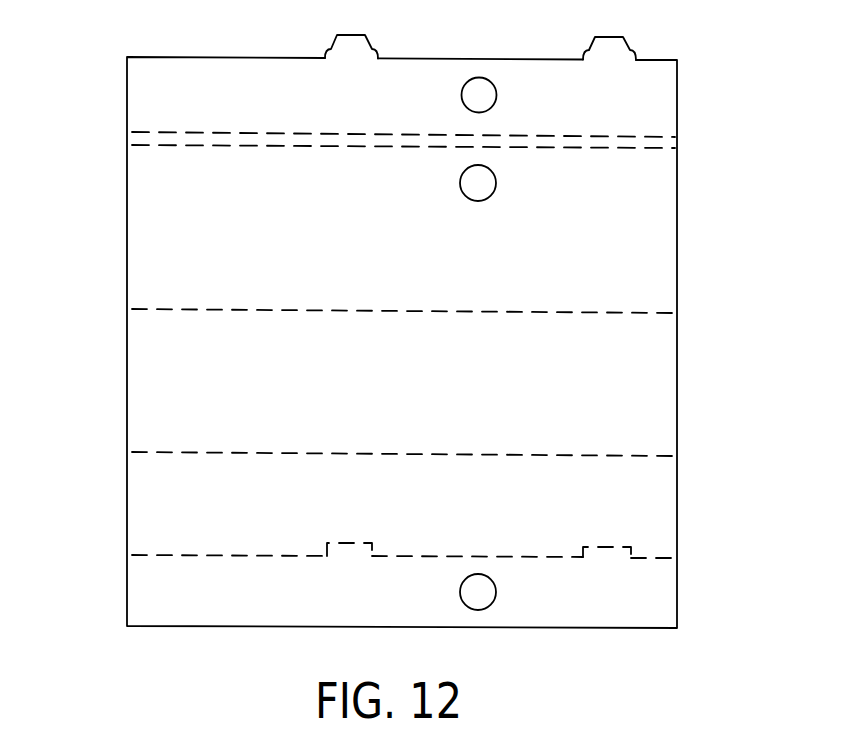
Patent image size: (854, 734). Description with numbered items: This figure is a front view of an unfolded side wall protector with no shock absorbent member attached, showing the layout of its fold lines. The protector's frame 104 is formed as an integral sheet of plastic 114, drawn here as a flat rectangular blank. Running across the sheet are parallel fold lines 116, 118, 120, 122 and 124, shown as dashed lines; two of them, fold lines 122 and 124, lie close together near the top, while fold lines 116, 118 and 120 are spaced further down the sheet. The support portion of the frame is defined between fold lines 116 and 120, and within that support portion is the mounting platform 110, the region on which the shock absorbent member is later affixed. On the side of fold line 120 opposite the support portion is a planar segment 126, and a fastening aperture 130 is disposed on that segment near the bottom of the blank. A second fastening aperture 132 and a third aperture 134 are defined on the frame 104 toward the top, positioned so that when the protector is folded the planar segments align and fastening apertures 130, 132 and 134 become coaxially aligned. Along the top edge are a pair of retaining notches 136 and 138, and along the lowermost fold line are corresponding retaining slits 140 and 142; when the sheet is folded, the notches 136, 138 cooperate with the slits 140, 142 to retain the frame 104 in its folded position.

The frame 104 is at (128, 250).
The mounting platform 110 is at (657, 504).
The integral sheet of plastic 114 is at (638, 382).
The fold line 116 is at (643, 312).
The fold line 118 is at (622, 457).
The fold line 120 is at (157, 180).
The fold line 122 is at (645, 135).
The fold line 124 is at (645, 148).
The planar segment 126 is at (645, 605).
The fastening aperture 130 is at (478, 610).
The second fastening aperture 132 is at (488, 165).
The third aperture 134 is at (482, 78).
The retaining notch 136 is at (343, 45).
The retaining notch 138 is at (613, 48).
The retaining slit 140 is at (355, 540).
The retaining slit 142 is at (610, 543).